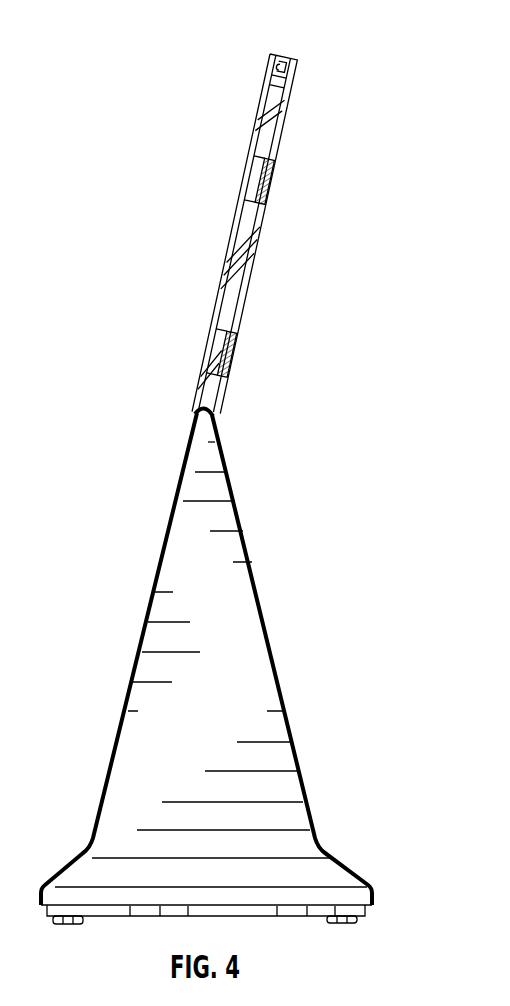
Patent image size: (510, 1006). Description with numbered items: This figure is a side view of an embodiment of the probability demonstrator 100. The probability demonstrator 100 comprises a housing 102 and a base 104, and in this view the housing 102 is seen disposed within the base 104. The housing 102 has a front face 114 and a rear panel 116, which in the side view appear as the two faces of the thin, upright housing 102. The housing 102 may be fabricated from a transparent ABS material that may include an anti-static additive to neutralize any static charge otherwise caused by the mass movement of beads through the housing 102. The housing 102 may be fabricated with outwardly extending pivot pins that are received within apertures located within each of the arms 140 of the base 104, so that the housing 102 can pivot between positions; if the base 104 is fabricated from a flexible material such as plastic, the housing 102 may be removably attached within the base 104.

The probability demonstrator 100 is at (327, 37).
The housing 102 is at (237, 362).
The base 104 is at (153, 743).
The front face 114 is at (229, 243).
The rear panel 116 is at (272, 184).
The arms 140 is at (212, 450).